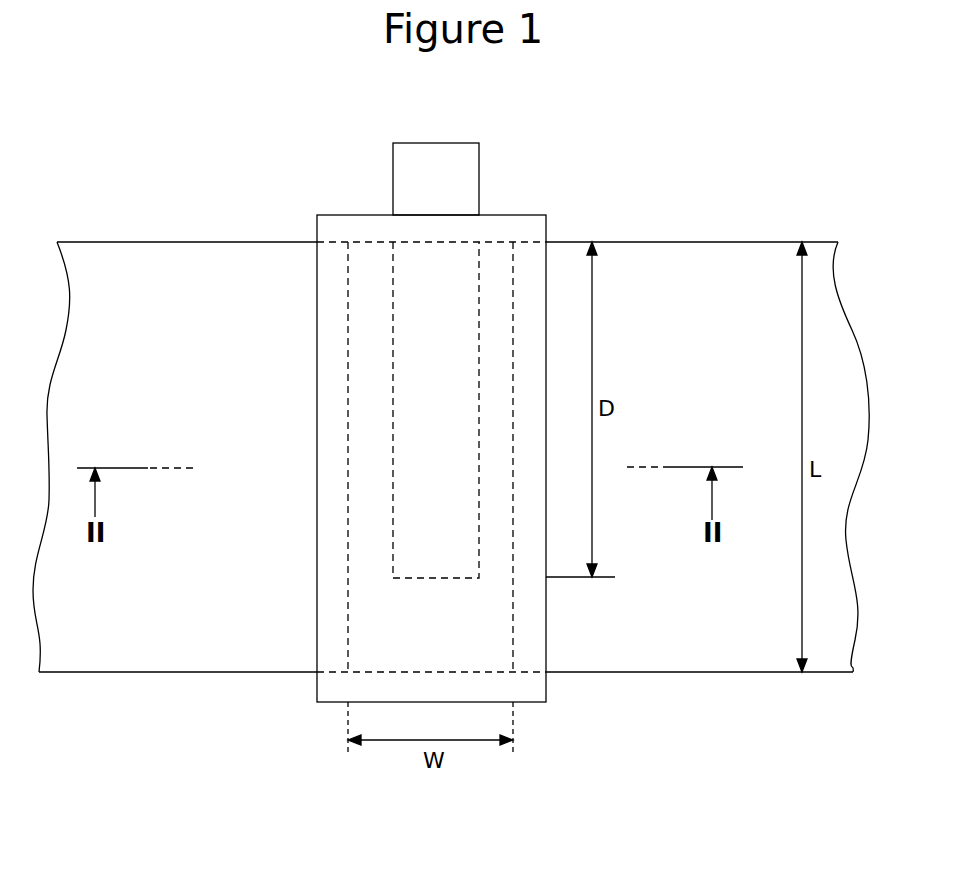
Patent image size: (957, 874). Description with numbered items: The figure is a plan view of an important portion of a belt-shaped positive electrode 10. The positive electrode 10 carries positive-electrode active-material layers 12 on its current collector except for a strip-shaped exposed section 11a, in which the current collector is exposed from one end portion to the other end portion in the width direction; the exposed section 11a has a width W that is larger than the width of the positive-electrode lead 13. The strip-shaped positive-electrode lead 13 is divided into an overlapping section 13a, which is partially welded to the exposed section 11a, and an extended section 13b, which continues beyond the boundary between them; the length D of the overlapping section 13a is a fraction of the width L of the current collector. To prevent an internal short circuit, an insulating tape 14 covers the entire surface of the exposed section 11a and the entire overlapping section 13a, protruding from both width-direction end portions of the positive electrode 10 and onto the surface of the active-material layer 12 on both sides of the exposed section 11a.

The positive electrode 10 is at (708, 128).
The exposed section 11a is at (488, 602).
The positive-electrode active-material layer 12 is at (730, 630).
The positive-electrode lead 13 is at (249, 75).
The overlapping section 13a is at (447, 335).
The extended section 13b is at (413, 163).
The insulating tape 14 is at (525, 215).